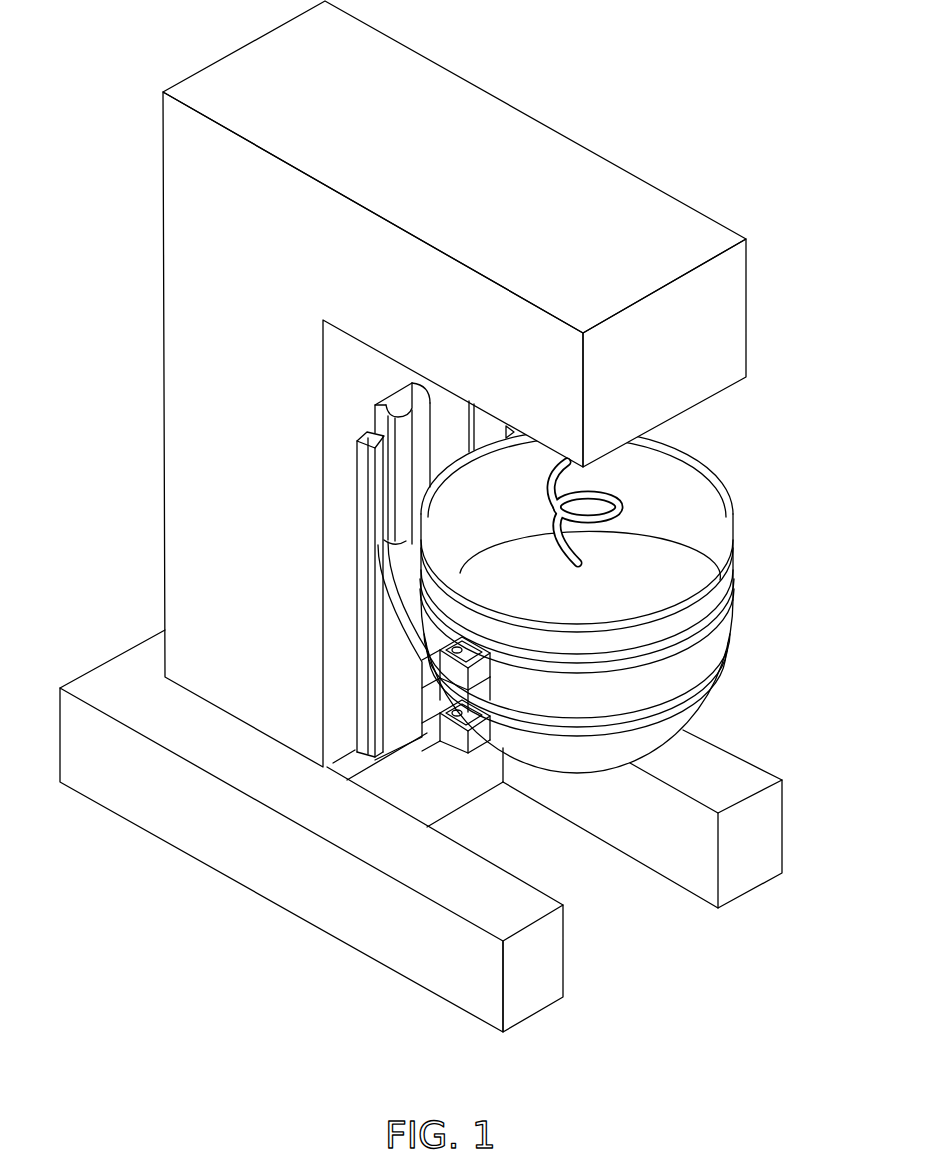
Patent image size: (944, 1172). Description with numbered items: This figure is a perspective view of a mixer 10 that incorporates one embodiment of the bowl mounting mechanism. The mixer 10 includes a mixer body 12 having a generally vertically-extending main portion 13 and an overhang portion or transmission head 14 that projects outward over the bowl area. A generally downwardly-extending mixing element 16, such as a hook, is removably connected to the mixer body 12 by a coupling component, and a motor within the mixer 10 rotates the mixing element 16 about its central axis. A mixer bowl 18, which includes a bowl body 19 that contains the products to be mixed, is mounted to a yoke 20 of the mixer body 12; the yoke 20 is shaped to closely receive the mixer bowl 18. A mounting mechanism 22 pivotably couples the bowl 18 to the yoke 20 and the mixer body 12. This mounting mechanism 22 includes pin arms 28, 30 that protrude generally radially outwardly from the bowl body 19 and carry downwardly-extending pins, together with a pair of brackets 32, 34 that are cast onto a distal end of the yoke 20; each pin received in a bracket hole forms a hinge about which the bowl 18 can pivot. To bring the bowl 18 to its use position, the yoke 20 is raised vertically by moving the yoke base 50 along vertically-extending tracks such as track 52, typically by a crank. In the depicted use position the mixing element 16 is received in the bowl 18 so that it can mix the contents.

The mixer 10 is at (664, 104).
The mixer body 12 is at (168, 298).
The main portion 13 is at (168, 242).
The transmission head 14 is at (675, 400).
The mixing element 16 is at (612, 504).
The mixer bowl 18 is at (705, 660).
The bowl body 19 is at (718, 628).
The yoke 20 is at (385, 580).
The mounting mechanism 22 is at (518, 694).
The pin arm 28 is at (470, 655).
The pin arm 30 is at (485, 727).
The bracket 32 is at (482, 680).
The bracket 34 is at (470, 760).
The yoke base 50 is at (425, 487).
The track 52 is at (358, 470).